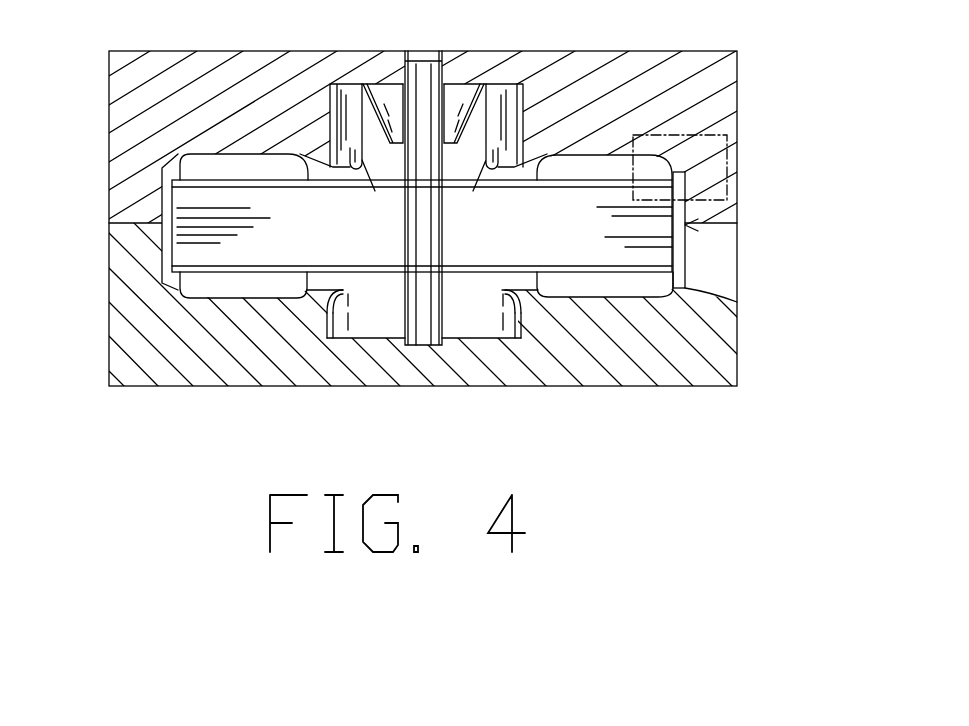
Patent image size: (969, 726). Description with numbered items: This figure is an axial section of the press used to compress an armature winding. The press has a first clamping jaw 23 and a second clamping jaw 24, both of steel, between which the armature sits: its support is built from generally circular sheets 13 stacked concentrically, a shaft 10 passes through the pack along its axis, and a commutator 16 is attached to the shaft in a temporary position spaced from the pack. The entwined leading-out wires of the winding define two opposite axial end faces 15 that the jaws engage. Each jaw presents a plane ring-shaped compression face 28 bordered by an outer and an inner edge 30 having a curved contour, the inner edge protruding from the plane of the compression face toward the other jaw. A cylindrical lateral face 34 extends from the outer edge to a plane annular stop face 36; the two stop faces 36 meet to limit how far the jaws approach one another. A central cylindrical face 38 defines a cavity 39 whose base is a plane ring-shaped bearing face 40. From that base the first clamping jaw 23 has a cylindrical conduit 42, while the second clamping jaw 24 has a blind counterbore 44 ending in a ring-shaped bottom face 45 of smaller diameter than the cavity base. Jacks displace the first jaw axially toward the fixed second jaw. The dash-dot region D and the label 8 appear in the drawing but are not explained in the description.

The valve plate 8 is at (275, 287).
The shaft 10 is at (347, 333).
The sheets 13 is at (188, 236).
The axial end face 15 is at (594, 155).
The commutator 16 is at (393, 172).
The first clamping jaw 23 is at (630, 67).
The second clamping jaw 24 is at (675, 377).
The compression face 28 is at (252, 347).
The edge 30 is at (240, 157).
The cylindrical lateral face 34 is at (703, 296).
The stop face 36 is at (700, 223).
The central cylindrical face 38 is at (518, 127).
The cavity 39 is at (457, 163).
The bearing face 40 is at (367, 87).
The cylindrical conduit 42 is at (433, 50).
The blind counterbore 44 is at (423, 320).
The bottom face 45 is at (440, 337).
The detail region D is at (727, 140).